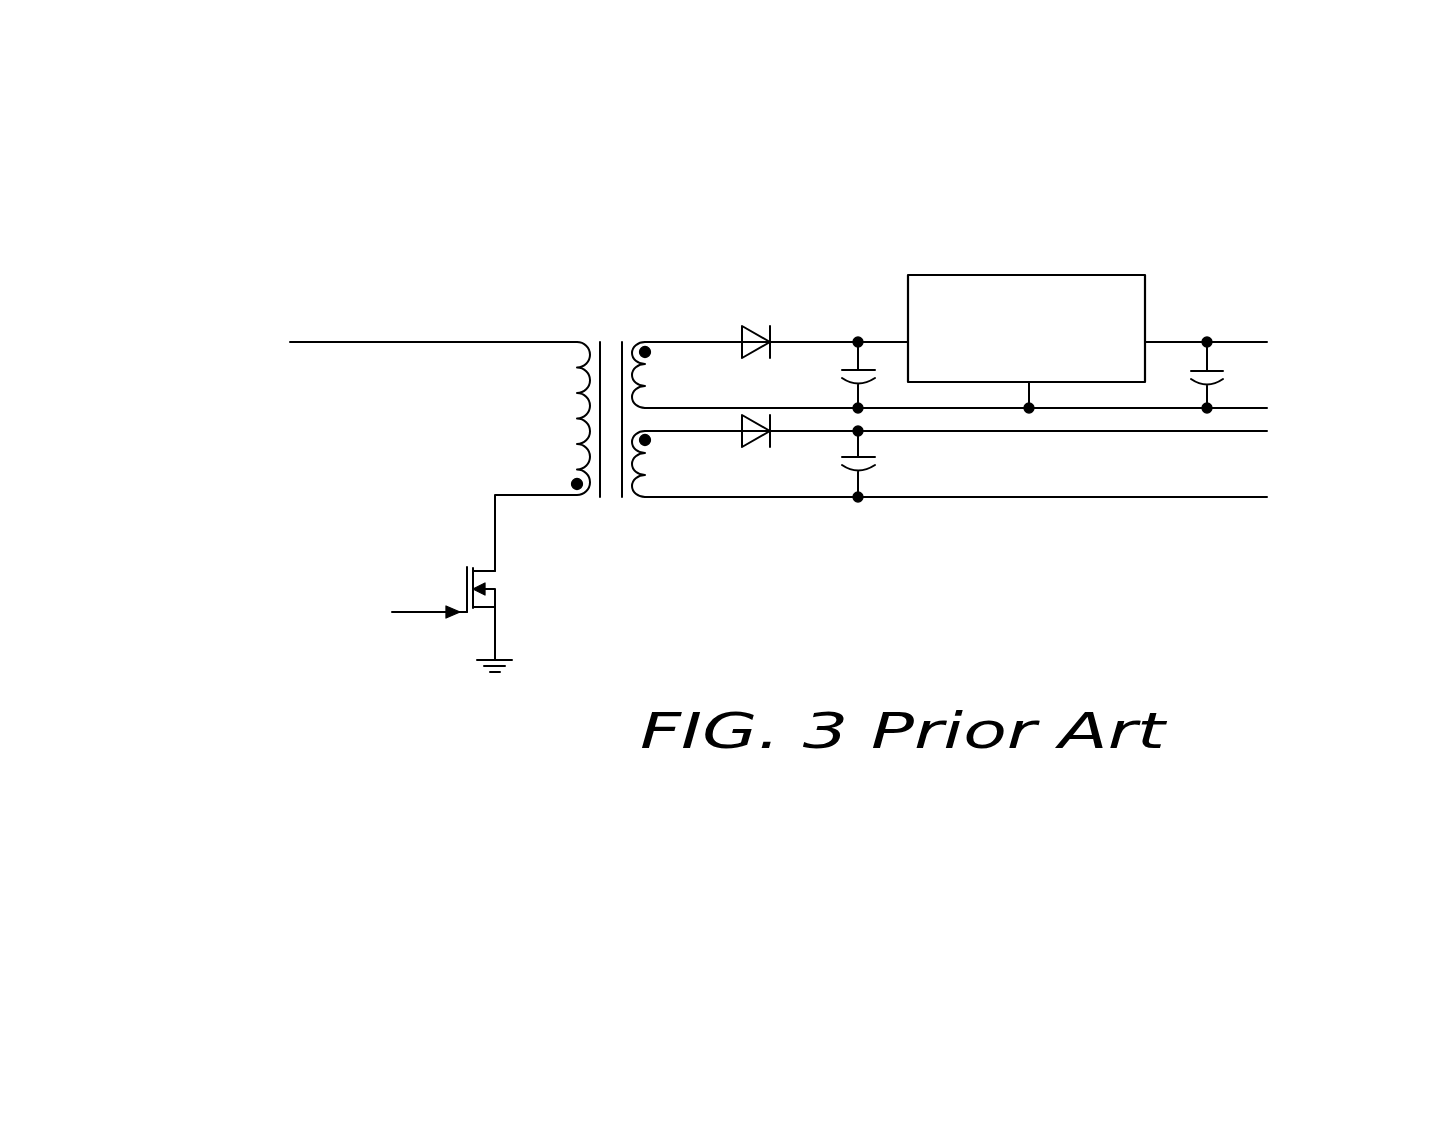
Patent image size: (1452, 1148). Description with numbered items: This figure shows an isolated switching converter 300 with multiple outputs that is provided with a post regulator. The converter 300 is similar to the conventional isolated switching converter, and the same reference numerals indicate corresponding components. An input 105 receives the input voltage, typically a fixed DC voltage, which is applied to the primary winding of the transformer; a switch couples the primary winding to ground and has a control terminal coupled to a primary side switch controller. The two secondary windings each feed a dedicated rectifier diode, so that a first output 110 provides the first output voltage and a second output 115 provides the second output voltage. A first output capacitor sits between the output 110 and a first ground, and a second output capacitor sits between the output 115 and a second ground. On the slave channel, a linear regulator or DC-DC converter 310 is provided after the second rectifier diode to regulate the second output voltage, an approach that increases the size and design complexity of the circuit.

The isolated switching converter 300 is at (265, 680).
The input 105 is at (294, 342).
The linear regulator or DC-DC converter 310 is at (1070, 275).
The output 115 is at (1207, 342).
The output 110 is at (1207, 431).